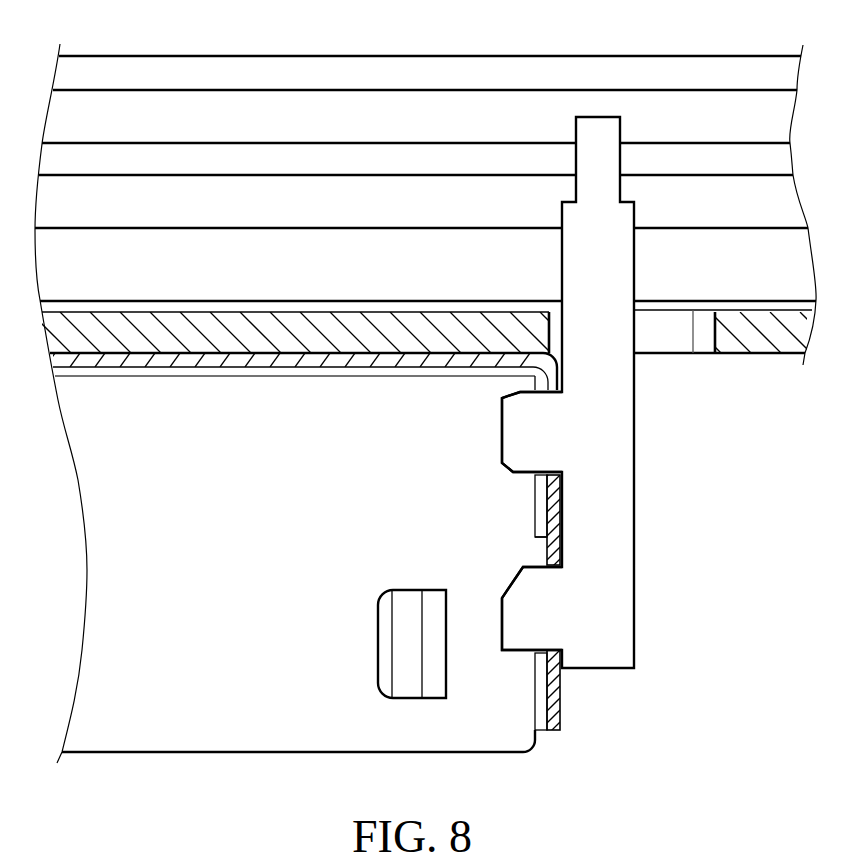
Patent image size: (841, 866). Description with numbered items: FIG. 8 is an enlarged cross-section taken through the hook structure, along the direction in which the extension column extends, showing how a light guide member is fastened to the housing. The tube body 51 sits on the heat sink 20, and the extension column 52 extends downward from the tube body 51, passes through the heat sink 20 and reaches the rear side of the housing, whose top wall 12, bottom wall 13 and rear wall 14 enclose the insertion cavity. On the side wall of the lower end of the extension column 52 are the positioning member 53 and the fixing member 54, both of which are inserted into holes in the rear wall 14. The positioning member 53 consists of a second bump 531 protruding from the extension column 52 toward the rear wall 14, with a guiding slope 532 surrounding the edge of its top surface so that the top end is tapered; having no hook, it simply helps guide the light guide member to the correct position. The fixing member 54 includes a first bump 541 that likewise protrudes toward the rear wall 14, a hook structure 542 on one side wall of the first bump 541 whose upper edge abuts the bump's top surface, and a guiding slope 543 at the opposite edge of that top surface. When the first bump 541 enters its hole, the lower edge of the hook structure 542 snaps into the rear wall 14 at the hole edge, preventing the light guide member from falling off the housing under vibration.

The heat sink 20 is at (387, 75).
The tube body 51 is at (458, 112).
The top wall 12 is at (105, 541).
The bottom wall 13 is at (458, 752).
The rear wall 14 is at (555, 722).
The extension column 52 is at (600, 517).
The positioning member 53 is at (705, 425).
The second bump 531 is at (535, 447).
The guiding slope 532 is at (530, 490).
The fixing member 54 is at (705, 535).
The first bump 541 is at (530, 617).
The hook structure 542 is at (552, 723).
The guiding slope 543 is at (505, 553).